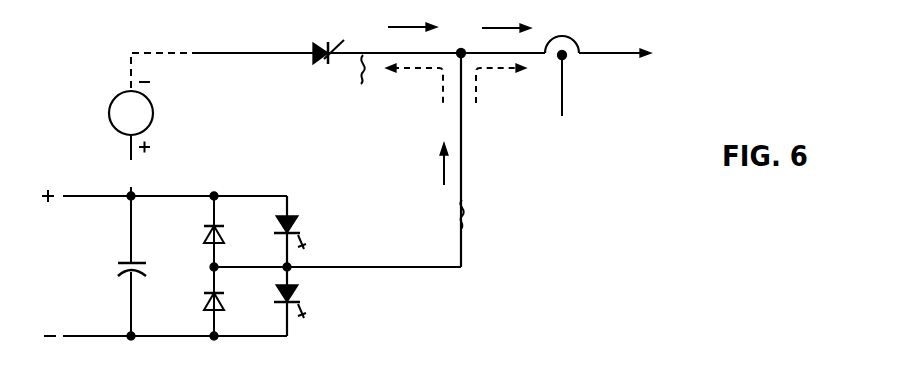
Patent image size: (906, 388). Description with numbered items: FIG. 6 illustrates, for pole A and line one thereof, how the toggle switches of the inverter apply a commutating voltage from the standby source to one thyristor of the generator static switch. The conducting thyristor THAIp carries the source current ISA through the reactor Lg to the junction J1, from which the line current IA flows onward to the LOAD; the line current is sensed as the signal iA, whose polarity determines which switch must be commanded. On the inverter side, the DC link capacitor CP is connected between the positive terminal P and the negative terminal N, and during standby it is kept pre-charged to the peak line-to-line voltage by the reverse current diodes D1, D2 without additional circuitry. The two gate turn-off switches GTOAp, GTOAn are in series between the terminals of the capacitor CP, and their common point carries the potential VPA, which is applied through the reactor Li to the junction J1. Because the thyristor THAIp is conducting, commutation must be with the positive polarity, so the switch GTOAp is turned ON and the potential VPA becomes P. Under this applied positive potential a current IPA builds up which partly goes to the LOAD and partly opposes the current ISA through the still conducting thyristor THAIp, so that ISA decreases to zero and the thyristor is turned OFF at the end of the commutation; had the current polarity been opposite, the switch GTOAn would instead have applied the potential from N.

The thyristor THAIp is at (319, 64).
The reactor Lg is at (350, 82).
The junction J1 is at (462, 50).
The thyristor current ISA is at (412, 16).
The line current IA is at (506, 16).
The load LOAD is at (640, 55).
The sensed line current signal iA is at (562, 94).
The commutating current IPA is at (425, 164).
The inverter reactor Li is at (479, 160).
The positive GTO switch of pole A GTOAp is at (297, 224).
The negative GTO switch of pole A GTOAn is at (297, 297).
The reverse current diode D1 is at (204, 237).
The reverse current diode D2 is at (203, 303).
The DC link capacitor CP is at (118, 266).
The commutation potential VPA is at (212, 268).
The positive DC link terminal P is at (132, 184).
The negative DC link terminal N is at (132, 347).